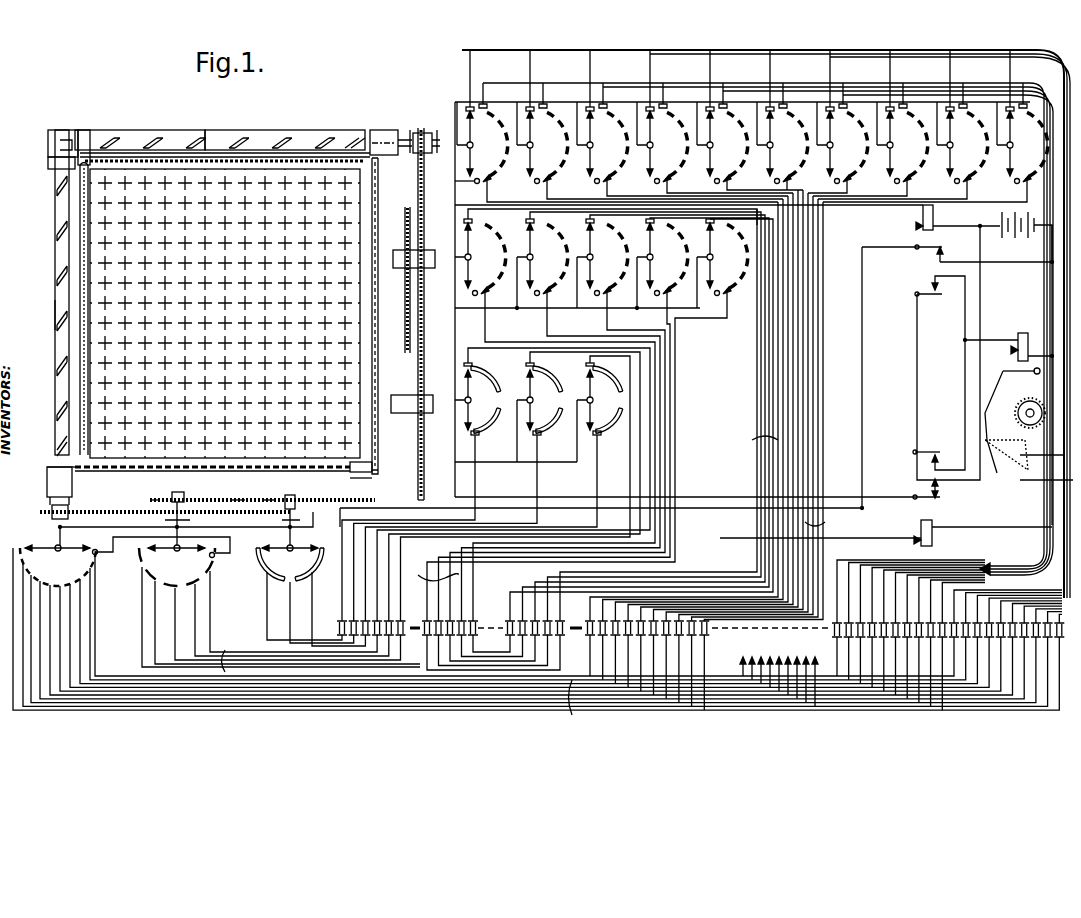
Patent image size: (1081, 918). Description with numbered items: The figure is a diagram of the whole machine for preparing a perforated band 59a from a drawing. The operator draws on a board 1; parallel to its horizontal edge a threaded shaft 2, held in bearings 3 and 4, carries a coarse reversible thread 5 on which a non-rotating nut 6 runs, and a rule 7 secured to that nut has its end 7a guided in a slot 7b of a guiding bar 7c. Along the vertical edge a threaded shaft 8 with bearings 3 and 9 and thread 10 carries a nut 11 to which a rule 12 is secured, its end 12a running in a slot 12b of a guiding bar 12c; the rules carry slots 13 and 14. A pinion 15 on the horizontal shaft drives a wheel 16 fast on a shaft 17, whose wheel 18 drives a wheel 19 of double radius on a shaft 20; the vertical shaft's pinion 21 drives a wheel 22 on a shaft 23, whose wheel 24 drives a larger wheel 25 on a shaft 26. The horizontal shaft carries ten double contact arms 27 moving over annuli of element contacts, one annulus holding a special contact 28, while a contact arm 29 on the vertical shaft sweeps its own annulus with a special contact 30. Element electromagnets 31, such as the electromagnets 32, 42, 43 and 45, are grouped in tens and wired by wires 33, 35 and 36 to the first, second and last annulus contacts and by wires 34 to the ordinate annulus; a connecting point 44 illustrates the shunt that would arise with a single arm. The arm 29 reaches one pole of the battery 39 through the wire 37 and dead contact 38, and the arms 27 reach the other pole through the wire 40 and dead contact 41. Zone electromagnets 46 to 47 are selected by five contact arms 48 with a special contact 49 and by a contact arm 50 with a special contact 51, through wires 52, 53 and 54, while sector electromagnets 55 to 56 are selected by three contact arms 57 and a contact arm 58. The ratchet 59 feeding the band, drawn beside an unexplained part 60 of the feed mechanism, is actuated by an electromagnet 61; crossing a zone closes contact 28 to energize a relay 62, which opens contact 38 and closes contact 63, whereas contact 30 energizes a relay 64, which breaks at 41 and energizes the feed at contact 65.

The board 1 is at (268, 490).
The threaded shaft 2 is at (218, 150).
The bearing 3 is at (62, 130).
The bearing 4 is at (388, 130).
The thread 5 is at (240, 140).
The nut 6 is at (85, 132).
The rule 7 is at (95, 472).
The end of the rule 7a is at (75, 467).
The slot 7b is at (372, 467).
The guiding bar 7c is at (370, 478).
The threaded shaft 8 is at (55, 343).
The bearing 9 is at (47, 478).
The thread 10 is at (58, 312).
The nut 11 is at (50, 168).
The rule 12 is at (150, 155).
The end of the rule 12a is at (385, 130).
The slot 12b is at (380, 218).
The guiding bar 12c is at (380, 375).
The slot 13 is at (80, 237).
The slot 14 is at (182, 160).
The pinion 15 is at (423, 130).
The wheel 16 is at (418, 178).
The shaft 17 is at (430, 255).
The wheel 18 is at (407, 292).
The wheel 19 is at (420, 443).
The shaft 20 is at (423, 400).
The pinion 21 is at (149, 512).
The wheel 22 is at (112, 500).
The shaft 23 is at (180, 492).
The wheel 24 is at (158, 490).
The wheel 25 is at (238, 490).
The shaft 26 is at (293, 495).
The double contact arms 27 is at (1015, 155).
The special contact 28 is at (476, 180).
The contact arm 29 is at (52, 543).
The special contact 30 is at (125, 561).
The element electromagnets 31 is at (590, 622).
The electromagnet 32 is at (1060, 620).
The wires 33 is at (1045, 480).
The wires 34 is at (574, 690).
The wires 35 is at (1041, 453).
The wires 36 is at (828, 525).
The wire 37 is at (707, 508).
The dead contact 38 is at (930, 252).
The source of electric current 39 is at (1020, 236).
The wire 40 is at (833, 497).
The dead contact 41 is at (940, 497).
The electromagnet 42 is at (940, 630).
The electromagnet 43 is at (930, 630).
The connecting point 44 is at (920, 713).
The electromagnet 45 is at (1050, 623).
The zone electromagnets 46 is at (530, 620).
The zone electromagnets 47 is at (420, 624).
The contact arms 48 is at (675, 413).
The special contact 49 is at (472, 296).
The contact arm 50 is at (177, 565).
The special contact 51 is at (215, 557).
The wires 52 is at (752, 437).
The wires 53 is at (429, 573).
The wires 54 is at (225, 660).
The sector electromagnets 55 is at (345, 620).
The sector electromagnets 56 is at (340, 628).
The contact arms 57 is at (496, 484).
The contact arm 58 is at (290, 563).
The ratchet 59 is at (1033, 400).
The perforated band 59a is at (1006, 463).
The lever 60 is at (1013, 408).
The electromagnet 61 is at (1028, 350).
The relay 62 is at (922, 212).
The contact 63 is at (933, 302).
The relay 64 is at (934, 527).
The contact 65 is at (928, 448).